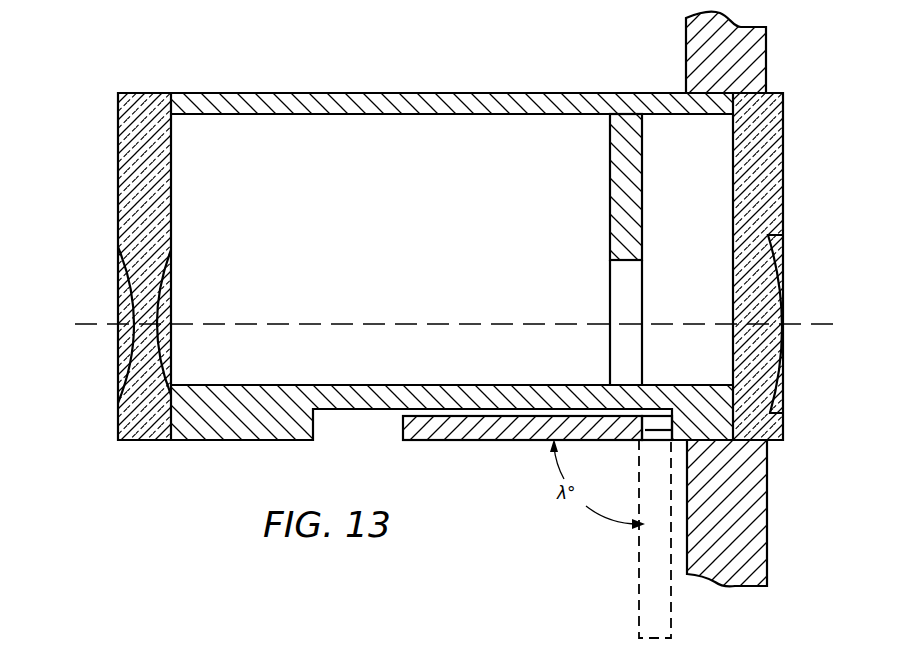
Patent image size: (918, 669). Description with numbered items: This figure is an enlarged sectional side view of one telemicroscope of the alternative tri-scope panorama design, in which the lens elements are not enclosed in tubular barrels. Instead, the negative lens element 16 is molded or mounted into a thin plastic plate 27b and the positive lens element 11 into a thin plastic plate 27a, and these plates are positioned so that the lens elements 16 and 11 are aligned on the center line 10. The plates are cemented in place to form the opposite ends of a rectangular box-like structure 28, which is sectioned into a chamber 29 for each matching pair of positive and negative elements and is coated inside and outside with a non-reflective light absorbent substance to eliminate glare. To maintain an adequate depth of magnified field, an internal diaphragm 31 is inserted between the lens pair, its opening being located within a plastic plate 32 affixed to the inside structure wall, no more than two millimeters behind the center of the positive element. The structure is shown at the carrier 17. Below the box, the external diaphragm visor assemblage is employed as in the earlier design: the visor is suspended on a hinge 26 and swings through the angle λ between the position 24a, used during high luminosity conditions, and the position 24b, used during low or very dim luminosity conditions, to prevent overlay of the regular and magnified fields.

The center line 10 is at (811, 320).
The positive lens element 11 is at (781, 262).
The negative lens element 16 is at (136, 346).
The carrier 17 is at (768, 548).
The adjustable diaphragm visor (high luminosity position) 24a is at (463, 442).
The adjustable diaphragm visor (low luminosity position) 24b is at (637, 562).
The hinge 26 is at (638, 441).
The plastic plate (positive element) 27a is at (784, 220).
The plastic plate (negative element) 27b is at (118, 234).
The rectangular box-like structure 28 is at (241, 93).
The chamber 29 is at (368, 137).
The internal diaphragm 31 is at (610, 295).
The plastic plate 32 is at (607, 143).